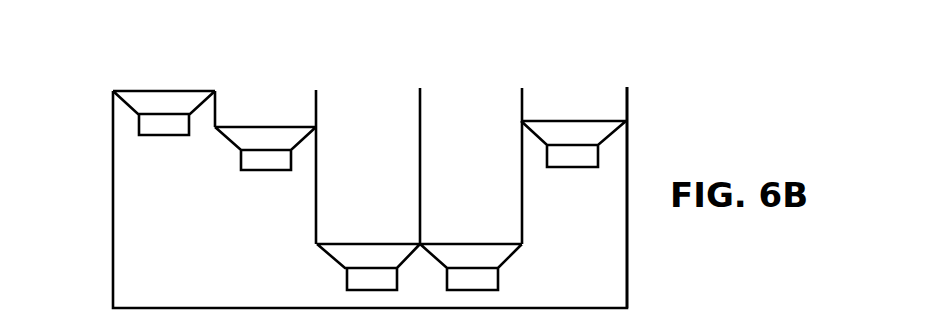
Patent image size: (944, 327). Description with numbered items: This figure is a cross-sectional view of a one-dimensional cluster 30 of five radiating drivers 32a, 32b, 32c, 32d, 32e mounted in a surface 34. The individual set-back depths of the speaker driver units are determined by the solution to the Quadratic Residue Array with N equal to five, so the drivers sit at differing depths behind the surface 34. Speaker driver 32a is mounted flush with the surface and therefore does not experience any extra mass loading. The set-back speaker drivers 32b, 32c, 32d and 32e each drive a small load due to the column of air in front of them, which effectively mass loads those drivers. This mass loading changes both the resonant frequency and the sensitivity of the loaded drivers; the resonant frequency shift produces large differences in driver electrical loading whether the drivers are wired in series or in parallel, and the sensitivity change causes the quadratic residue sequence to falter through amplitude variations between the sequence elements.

The one-dimensional cluster 30 is at (118, 73).
The radiating driver 32a is at (163, 100).
The radiating driver 32b is at (260, 130).
The radiating driver 32c is at (370, 180).
The radiating driver 32d is at (472, 187).
The radiating driver 32e is at (567, 133).
The surface 34 is at (631, 165).